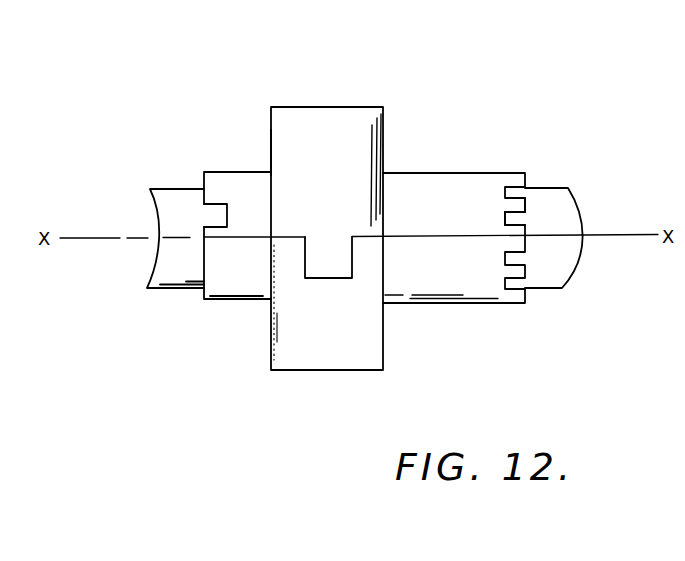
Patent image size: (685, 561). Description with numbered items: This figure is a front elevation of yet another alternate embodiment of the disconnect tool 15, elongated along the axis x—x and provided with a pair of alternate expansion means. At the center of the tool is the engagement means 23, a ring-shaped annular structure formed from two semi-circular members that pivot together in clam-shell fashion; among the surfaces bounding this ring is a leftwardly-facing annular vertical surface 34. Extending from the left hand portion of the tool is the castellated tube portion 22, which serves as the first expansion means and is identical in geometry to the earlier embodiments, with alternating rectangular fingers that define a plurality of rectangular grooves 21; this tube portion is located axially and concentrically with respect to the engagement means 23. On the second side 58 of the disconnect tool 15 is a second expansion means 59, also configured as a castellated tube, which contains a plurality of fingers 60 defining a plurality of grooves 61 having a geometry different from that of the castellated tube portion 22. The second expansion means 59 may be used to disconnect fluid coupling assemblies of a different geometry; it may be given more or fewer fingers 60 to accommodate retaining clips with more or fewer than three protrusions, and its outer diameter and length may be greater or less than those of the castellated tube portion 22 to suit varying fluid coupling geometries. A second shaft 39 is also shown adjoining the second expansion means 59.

The disconnect tool 15 is at (352, 90).
The groove 21 is at (212, 218).
The castellated tube portion 22 is at (227, 172).
The engagement means 23 is at (299, 107).
The leftwardly-facing annular vertical surface 34 is at (270, 150).
The second shaft 39 is at (548, 289).
The second side 58 is at (383, 141).
The second expansion means 59 is at (473, 173).
The finger 60 is at (526, 202).
The groove 61 is at (525, 220).